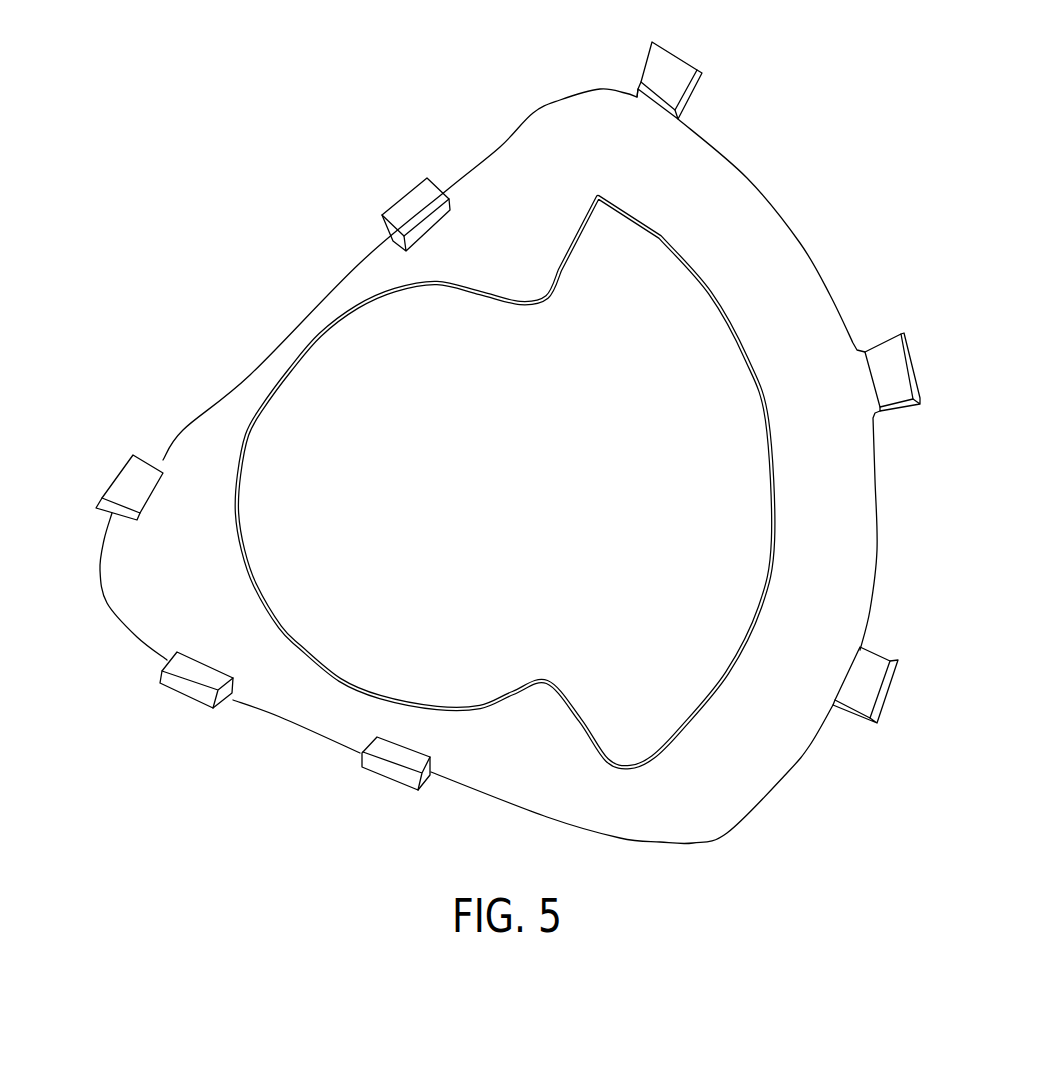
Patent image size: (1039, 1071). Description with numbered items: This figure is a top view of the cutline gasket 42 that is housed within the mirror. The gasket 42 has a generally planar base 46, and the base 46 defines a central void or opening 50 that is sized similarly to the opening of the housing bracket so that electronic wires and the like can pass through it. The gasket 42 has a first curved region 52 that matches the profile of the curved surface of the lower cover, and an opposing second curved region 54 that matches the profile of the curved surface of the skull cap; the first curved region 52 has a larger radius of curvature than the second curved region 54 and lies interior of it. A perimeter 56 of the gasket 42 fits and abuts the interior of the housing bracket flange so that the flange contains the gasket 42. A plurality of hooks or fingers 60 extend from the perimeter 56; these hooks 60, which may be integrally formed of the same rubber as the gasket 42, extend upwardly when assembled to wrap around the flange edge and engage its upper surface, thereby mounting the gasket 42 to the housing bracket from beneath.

The gasket 42 is at (185, 226).
The base 46 is at (510, 173).
The opening 50 is at (325, 405).
The first curved region 52 is at (852, 515).
The second curved region 54 is at (133, 585).
The perimeter 56 is at (787, 773).
The hooks 60 is at (670, 70).